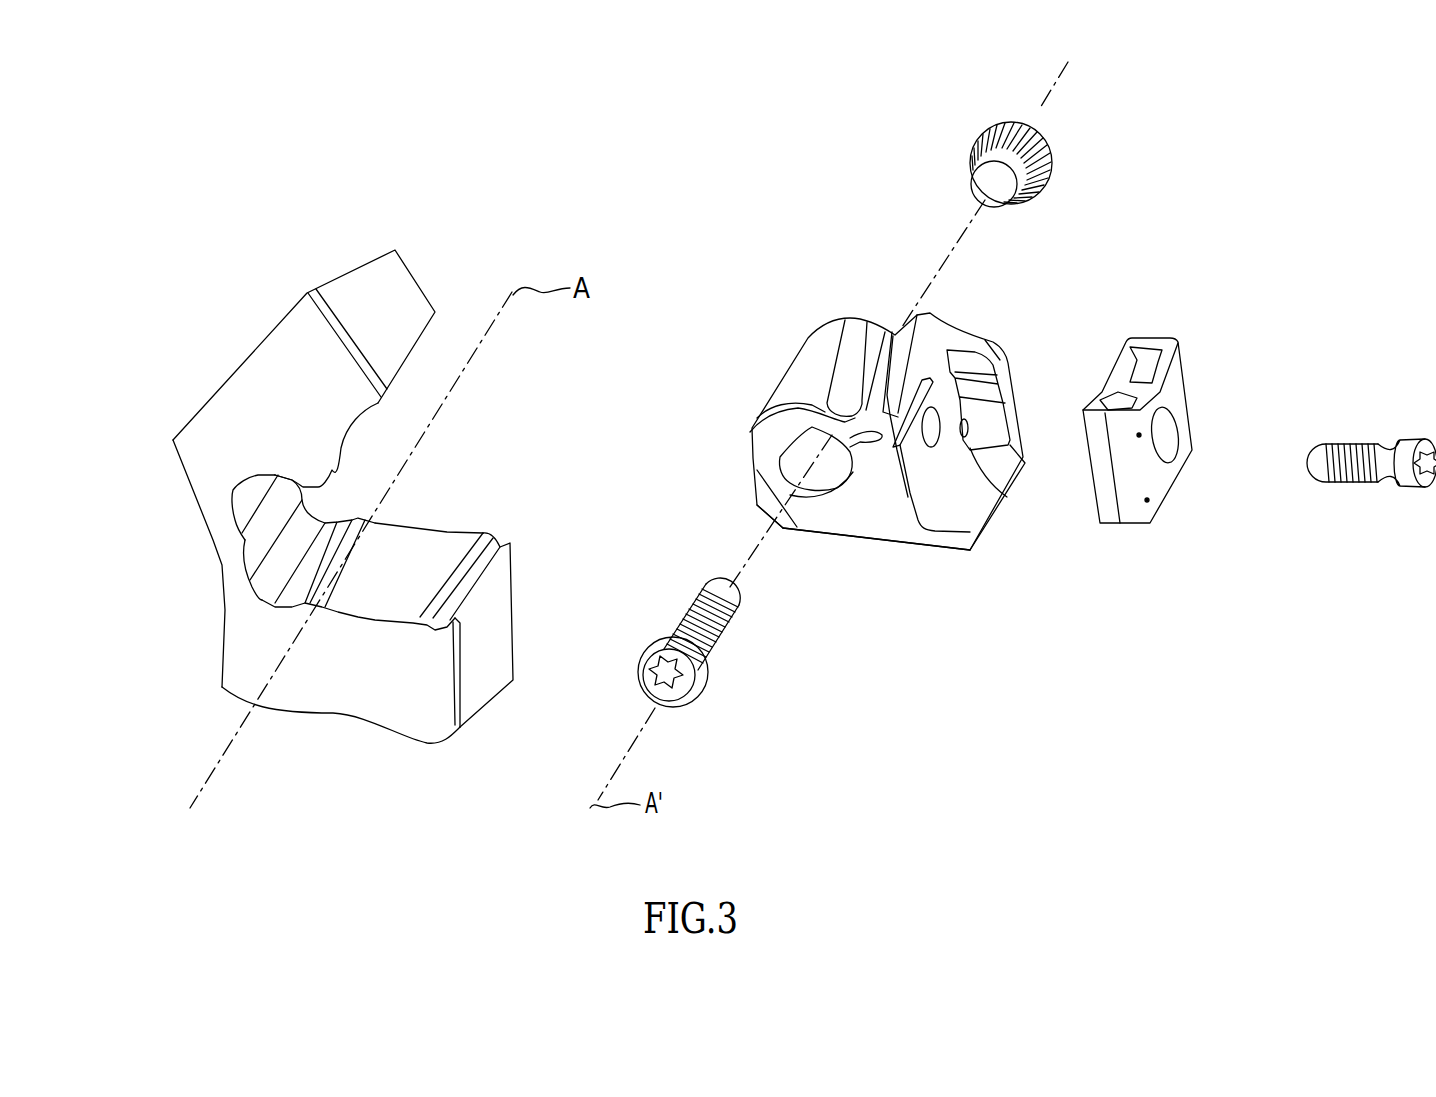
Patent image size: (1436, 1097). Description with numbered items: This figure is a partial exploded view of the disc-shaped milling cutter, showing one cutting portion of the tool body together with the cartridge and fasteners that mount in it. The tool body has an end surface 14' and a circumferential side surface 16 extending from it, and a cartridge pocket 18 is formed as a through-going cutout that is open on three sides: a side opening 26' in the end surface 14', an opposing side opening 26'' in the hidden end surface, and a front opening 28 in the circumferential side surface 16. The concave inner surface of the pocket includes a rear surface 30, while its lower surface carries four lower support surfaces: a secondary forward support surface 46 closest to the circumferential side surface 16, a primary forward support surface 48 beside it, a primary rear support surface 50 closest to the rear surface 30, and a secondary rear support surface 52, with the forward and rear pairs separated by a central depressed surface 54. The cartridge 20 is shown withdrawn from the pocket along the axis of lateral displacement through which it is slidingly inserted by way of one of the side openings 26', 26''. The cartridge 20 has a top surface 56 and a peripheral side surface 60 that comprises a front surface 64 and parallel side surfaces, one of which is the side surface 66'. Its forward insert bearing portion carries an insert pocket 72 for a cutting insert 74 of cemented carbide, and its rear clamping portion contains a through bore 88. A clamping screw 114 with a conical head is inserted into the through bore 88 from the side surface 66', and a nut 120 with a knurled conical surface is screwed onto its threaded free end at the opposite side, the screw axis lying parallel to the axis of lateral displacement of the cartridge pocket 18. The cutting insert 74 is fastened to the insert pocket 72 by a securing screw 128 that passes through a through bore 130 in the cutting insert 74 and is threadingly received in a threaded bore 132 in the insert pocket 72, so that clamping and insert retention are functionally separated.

The end surface 14' is at (366, 527).
The circumferential side surface 16 is at (490, 667).
The cartridge pocket 18 is at (478, 442).
The cartridge 20 is at (875, 438).
The side opening 26' is at (393, 648).
The side opening 26'' is at (451, 522).
The front opening 28 is at (472, 408).
The rear surface 30 is at (247, 540).
The secondary forward support surface 46 is at (498, 536).
The primary forward support surface 48 is at (479, 530).
The primary rear support surface 50 is at (355, 515).
The secondary rear support surface 52 is at (378, 522).
The central depressed surface 54 is at (448, 537).
The top surface 56 is at (855, 292).
The peripheral side surface 60 is at (806, 508).
The front surface 64 is at (1015, 503).
The side surface 66' is at (876, 561).
The insert pocket 72 is at (951, 508).
The cutting insert 74 is at (1170, 449).
The through bore 88 is at (787, 485).
The clamping screw 114 is at (718, 698).
The nut 120 is at (1062, 188).
The securing screw 128 is at (1358, 433).
The through bore 130 is at (1163, 437).
The threaded bore 132 is at (932, 428).